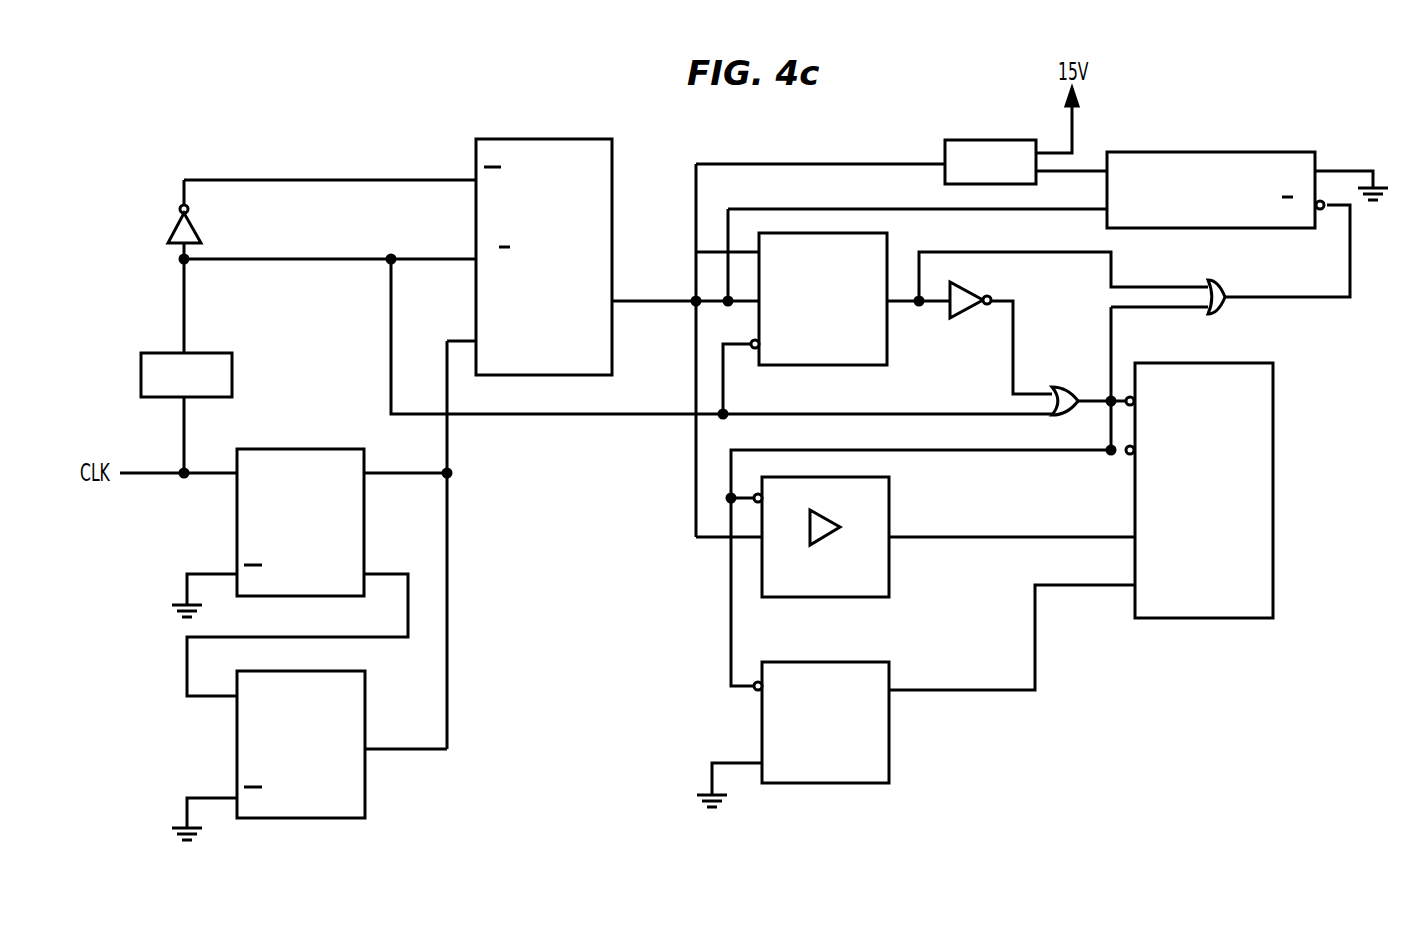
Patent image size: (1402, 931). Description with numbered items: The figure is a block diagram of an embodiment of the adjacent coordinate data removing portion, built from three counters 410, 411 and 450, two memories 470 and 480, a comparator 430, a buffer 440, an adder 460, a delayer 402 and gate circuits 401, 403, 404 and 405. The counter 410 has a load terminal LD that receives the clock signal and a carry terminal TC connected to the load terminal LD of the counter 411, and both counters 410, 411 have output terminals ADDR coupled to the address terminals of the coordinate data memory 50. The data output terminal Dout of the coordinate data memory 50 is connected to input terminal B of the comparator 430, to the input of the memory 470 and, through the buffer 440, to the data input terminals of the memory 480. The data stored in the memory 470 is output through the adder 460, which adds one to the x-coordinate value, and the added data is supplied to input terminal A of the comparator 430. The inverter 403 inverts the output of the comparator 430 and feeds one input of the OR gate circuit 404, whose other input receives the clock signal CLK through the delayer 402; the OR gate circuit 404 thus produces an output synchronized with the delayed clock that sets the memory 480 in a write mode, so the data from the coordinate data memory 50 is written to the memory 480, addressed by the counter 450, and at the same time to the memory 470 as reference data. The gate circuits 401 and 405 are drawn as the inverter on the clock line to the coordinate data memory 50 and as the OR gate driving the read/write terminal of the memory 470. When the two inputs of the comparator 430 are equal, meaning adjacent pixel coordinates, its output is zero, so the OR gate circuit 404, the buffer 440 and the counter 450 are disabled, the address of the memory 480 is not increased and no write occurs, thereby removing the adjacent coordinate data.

The coordinate data memory 50 is at (540, 139).
The gate circuit 401 is at (196, 228).
The delayer 402 is at (141, 378).
The inverter 403 is at (962, 283).
The OR gate circuit 404 is at (1070, 387).
The gate circuit 405 is at (1230, 283).
The counter 410 is at (290, 449).
The counter 411 is at (290, 818).
The comparator 430 is at (825, 365).
The buffer 440 is at (835, 597).
The counter 450 is at (835, 783).
The adder 460 is at (985, 140).
The memory 470 is at (1208, 152).
The memory 480 is at (1273, 433).